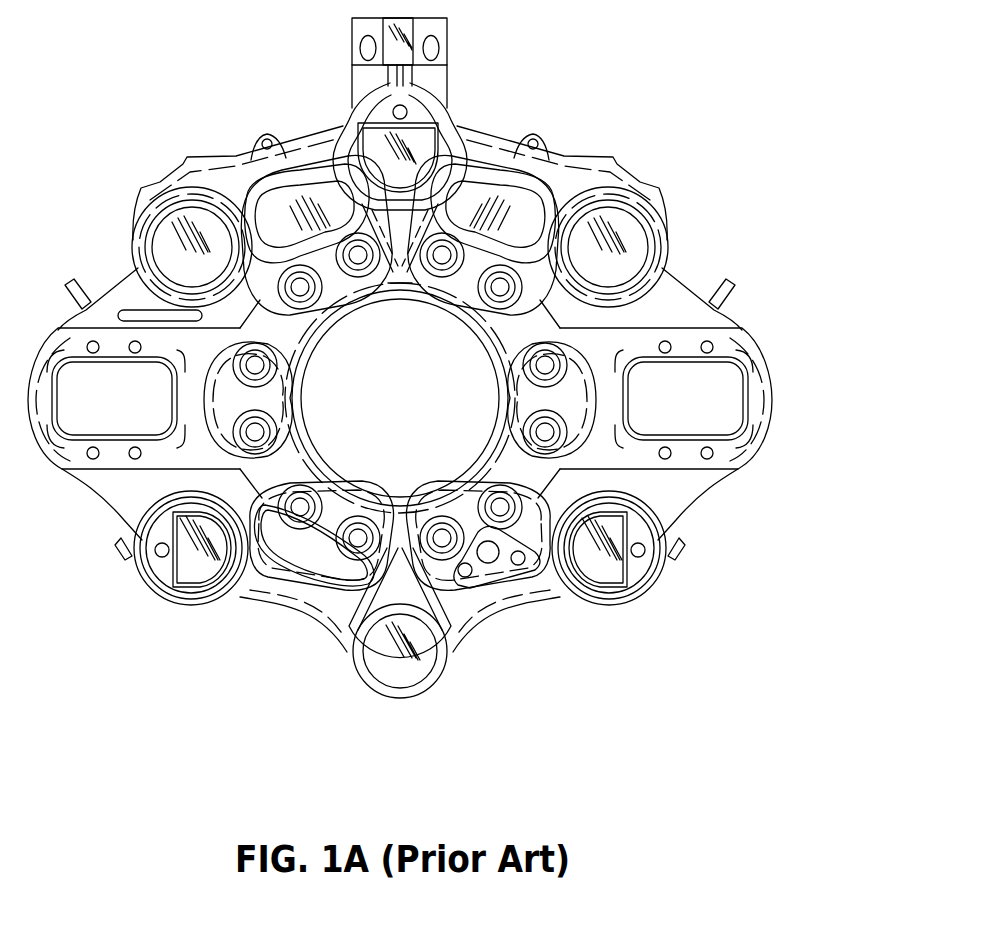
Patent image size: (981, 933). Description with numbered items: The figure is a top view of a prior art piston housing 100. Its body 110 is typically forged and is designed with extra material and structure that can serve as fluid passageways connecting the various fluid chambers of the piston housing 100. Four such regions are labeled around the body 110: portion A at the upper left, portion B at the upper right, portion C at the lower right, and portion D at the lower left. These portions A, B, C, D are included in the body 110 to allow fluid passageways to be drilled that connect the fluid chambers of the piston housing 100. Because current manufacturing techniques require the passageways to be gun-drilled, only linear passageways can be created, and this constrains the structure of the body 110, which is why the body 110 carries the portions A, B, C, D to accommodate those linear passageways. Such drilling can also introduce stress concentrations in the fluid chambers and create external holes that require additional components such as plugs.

The piston housing 100 is at (122, 136).
The body 110 is at (748, 330).
The portion A is at (226, 160).
The portion B is at (573, 156).
The portion C is at (548, 600).
The portion D is at (252, 600).